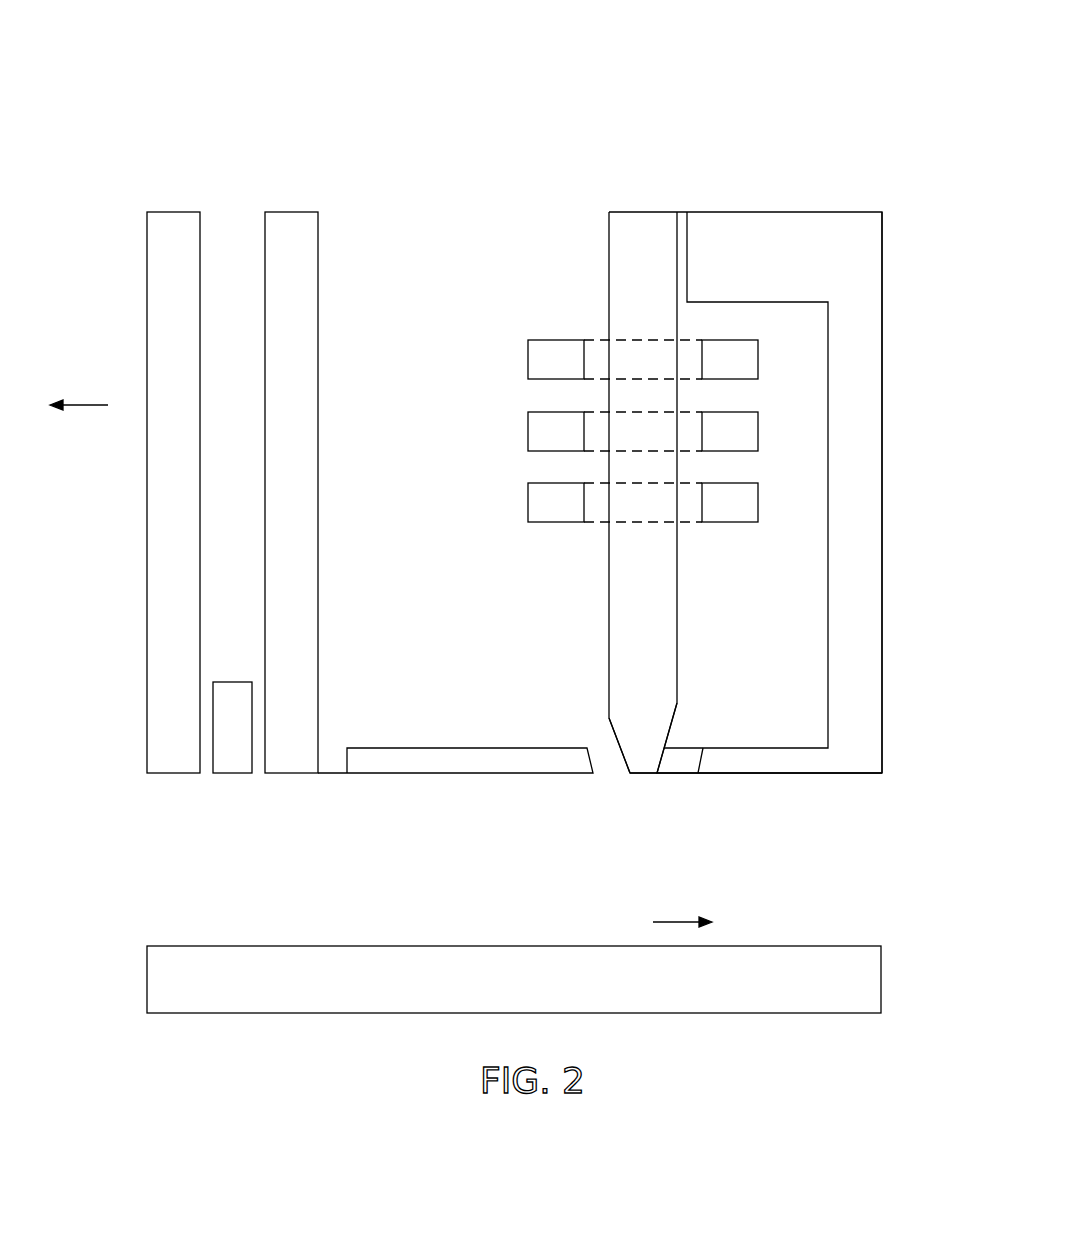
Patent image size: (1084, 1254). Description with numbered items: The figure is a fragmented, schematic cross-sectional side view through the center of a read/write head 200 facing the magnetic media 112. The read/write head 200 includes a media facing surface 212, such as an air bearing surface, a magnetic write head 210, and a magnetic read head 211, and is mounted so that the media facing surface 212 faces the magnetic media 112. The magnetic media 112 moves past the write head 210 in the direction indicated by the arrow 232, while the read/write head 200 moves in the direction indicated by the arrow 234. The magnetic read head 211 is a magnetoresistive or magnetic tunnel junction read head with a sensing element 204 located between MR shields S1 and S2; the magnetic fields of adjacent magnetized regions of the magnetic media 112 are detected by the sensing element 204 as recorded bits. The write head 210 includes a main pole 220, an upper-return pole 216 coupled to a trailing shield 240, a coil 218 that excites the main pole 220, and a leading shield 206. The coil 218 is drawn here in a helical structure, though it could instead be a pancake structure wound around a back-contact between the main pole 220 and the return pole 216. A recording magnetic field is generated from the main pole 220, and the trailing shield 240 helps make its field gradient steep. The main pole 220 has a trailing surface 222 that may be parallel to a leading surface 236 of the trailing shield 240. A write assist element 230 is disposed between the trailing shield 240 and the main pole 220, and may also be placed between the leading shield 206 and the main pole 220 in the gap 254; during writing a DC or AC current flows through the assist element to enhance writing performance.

The read/write head 200 is at (142, 38).
The magnetic read head 211 is at (323, 145).
The magnetic write head 210 is at (885, 145).
The MR shield S1 is at (172, 773).
The MR shield S2 is at (295, 773).
The MR sensing element 204 is at (233, 773).
The leading shield 206 is at (393, 773).
The return pole 216 is at (858, 262).
The leading surface 236 is at (827, 603).
The coil 218 is at (557, 523).
The main pole 220 is at (622, 728).
The trailing surface 222 is at (677, 687).
The gap 254 is at (610, 768).
The write assist element 230 is at (680, 762).
The media facing surface 212 is at (820, 775).
The trailing shield 240 is at (882, 733).
The arrow 234 is at (87, 403).
The arrow 232 is at (670, 922).
The magnetic media 112 is at (882, 977).